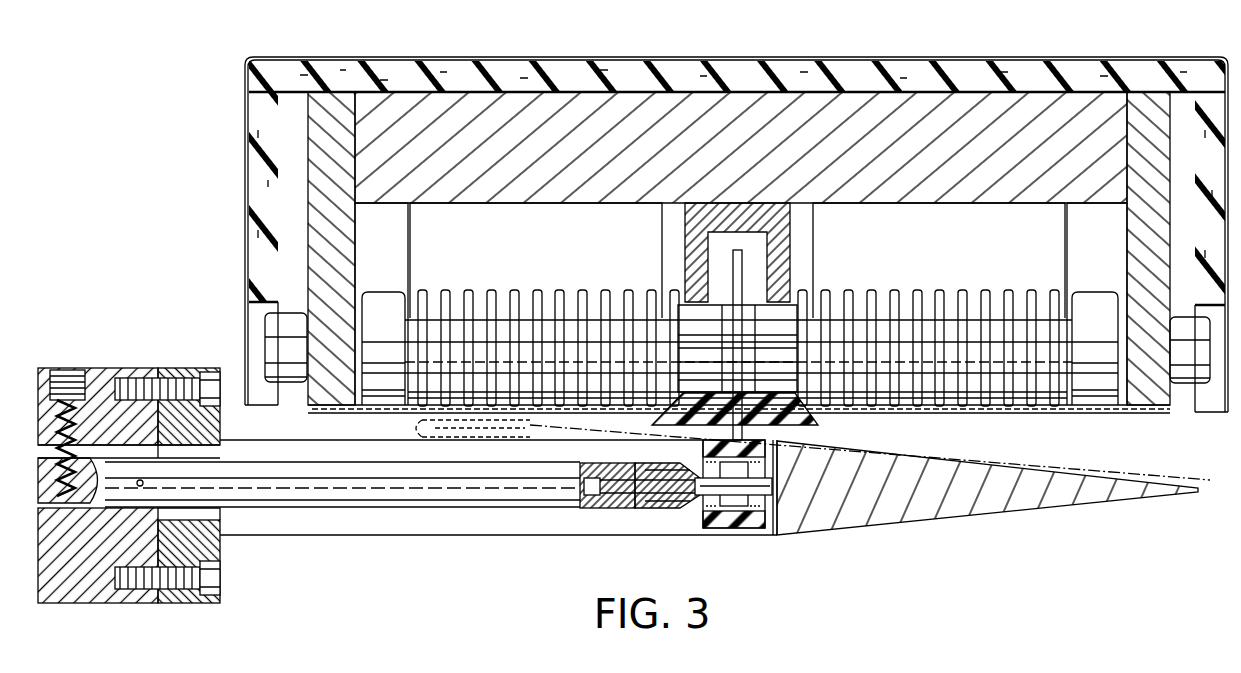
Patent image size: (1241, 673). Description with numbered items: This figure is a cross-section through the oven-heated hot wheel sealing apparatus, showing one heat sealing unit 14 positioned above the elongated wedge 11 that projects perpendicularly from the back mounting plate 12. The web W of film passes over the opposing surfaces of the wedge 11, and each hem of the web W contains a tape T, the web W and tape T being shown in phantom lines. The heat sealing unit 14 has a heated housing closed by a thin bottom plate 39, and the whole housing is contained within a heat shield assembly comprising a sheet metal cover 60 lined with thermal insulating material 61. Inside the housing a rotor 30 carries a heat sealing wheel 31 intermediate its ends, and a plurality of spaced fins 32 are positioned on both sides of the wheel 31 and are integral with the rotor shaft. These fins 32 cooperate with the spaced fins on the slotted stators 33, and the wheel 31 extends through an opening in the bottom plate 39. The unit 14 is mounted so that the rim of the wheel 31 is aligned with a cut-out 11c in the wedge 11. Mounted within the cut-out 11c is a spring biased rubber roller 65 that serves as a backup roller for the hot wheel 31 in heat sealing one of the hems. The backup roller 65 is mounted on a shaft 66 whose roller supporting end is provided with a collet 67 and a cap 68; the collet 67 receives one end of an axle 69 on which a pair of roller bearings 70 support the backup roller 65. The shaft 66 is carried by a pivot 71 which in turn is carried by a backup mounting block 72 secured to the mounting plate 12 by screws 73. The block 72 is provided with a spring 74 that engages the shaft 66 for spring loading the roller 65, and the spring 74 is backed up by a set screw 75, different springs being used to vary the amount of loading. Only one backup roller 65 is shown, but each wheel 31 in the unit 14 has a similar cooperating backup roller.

The sheet metal cover 60 is at (526, 58).
The thermal insulating material 61 is at (580, 72).
The heat sealing unit 14 is at (783, 38).
The bottom plate 39 is at (1105, 414).
The stator 33 is at (530, 232).
The rotor 30 is at (425, 298).
The fins 32 is at (470, 294).
The heat sealing wheel 31 is at (742, 264).
The web W is at (1055, 456).
The tape T is at (455, 440).
The back mounting plate 12 is at (195, 368).
The backup mounting block 72 is at (72, 600).
The screws 73 is at (140, 378).
The set screw 75 is at (70, 372).
The spring 74 is at (60, 410).
The shaft 66 is at (360, 495).
The pivot 71 is at (145, 484).
The collet 67 is at (605, 508).
The cut-out 11c is at (634, 525).
The cap 68 is at (672, 512).
The roller bearings 70 is at (732, 528).
The rubber roller 65 is at (745, 520).
The axle 69 is at (785, 530).
The wedge 11 is at (944, 518).